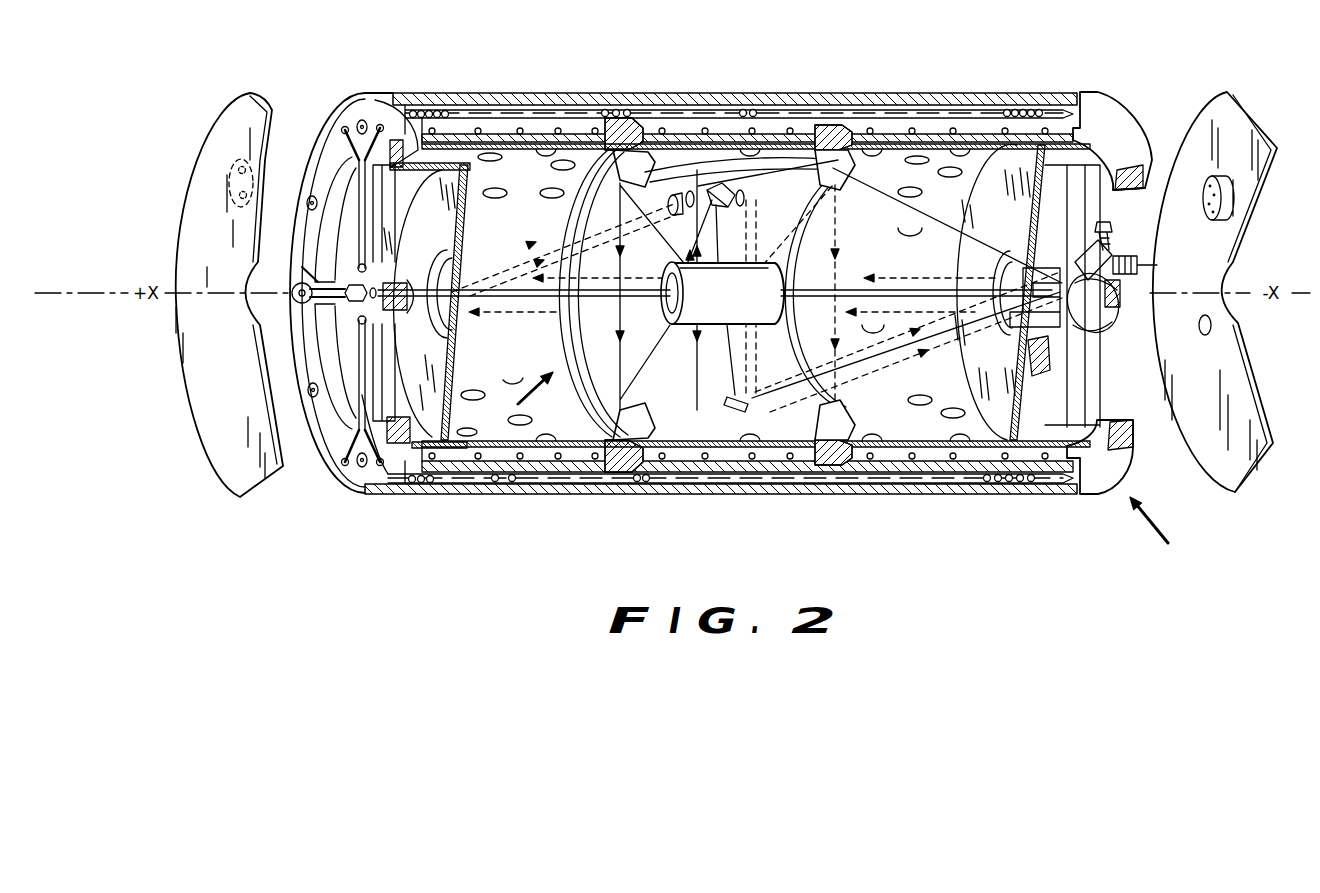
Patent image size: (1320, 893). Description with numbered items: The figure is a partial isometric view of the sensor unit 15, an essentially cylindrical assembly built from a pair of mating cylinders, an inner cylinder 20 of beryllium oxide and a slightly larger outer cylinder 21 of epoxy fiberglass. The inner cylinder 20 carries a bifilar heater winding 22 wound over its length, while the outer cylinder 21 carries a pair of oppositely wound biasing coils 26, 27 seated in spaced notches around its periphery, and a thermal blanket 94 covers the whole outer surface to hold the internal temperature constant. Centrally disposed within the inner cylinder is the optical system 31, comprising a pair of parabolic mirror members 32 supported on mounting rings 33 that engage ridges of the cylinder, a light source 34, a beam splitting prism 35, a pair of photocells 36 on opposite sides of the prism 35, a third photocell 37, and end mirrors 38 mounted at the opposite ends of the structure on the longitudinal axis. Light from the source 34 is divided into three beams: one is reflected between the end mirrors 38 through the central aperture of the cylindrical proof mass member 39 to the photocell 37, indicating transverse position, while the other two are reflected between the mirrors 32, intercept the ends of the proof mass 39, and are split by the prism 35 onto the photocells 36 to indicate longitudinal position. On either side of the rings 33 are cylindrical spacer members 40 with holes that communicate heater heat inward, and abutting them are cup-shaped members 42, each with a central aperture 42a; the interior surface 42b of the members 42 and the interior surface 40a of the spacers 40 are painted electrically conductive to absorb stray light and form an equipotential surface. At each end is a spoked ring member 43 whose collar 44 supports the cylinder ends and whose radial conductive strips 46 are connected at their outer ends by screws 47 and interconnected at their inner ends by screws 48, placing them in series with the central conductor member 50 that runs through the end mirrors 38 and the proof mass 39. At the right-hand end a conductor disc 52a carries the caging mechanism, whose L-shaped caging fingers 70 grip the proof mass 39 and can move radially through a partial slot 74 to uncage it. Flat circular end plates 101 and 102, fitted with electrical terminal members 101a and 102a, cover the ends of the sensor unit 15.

The sensor unit 15 is at (1166, 531).
The inner cylinder 20 is at (935, 128).
The outer cylinder 21 is at (890, 118).
The heater winding 22 is at (478, 130).
The biasing coil 26 is at (615, 113).
The biasing coil 27 is at (1025, 110).
The optical system 31 is at (523, 393).
The parabolic mirror member 32 is at (837, 185).
The mounting ring 33 is at (855, 180).
The light source 34 is at (725, 400).
The beam splitting prism 35 is at (726, 193).
The photocell 36 is at (697, 197).
The third photocell 37 is at (677, 216).
The end mirror 38 is at (406, 282).
The proof mass member 39 is at (708, 303).
The cylindrical spacer member 40 is at (866, 441).
The interior surface of spacer 40a is at (522, 228).
The cup-shaped member 42 is at (457, 372).
The central aperture 42a is at (524, 337).
The interior surface of cup-shaped member 42b is at (956, 350).
The spoked ring member 43 is at (333, 150).
The collar 44 is at (1118, 193).
The conductive strip 46 is at (366, 206).
The screw 47 is at (378, 128).
The screw 48 is at (358, 265).
The central conductor member 50 is at (878, 290).
The conductor disc 52a is at (1118, 304).
The caging finger 70 is at (1042, 266).
The partial slot 74 is at (1116, 255).
The thermal blanket 94 is at (800, 95).
The end plate 101 is at (1235, 93).
The electrical terminal member 101a is at (1208, 218).
The end plate 102 is at (251, 94).
The electrical terminal member 102a is at (264, 137).